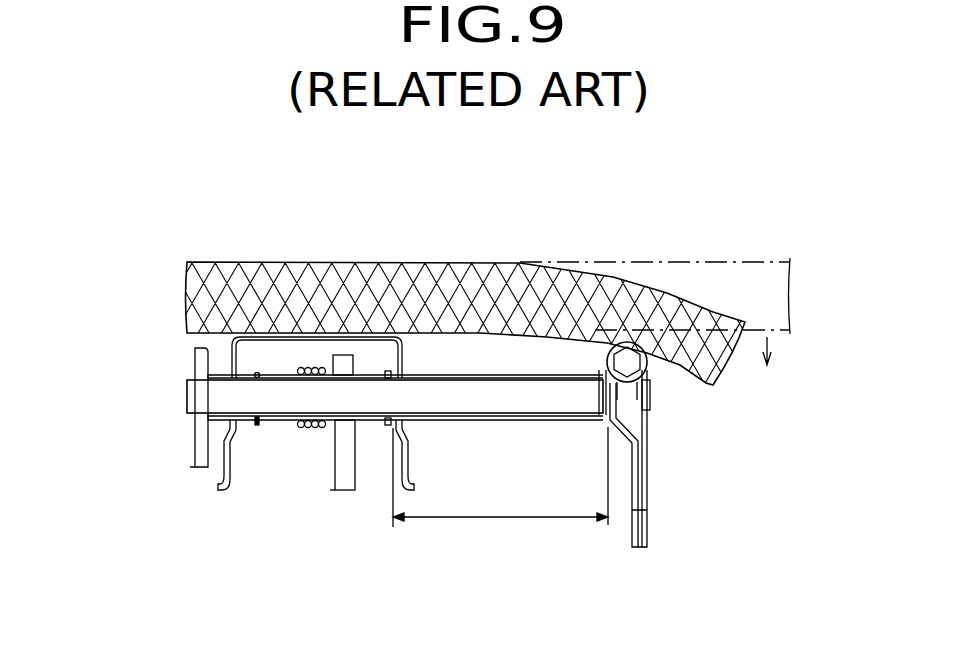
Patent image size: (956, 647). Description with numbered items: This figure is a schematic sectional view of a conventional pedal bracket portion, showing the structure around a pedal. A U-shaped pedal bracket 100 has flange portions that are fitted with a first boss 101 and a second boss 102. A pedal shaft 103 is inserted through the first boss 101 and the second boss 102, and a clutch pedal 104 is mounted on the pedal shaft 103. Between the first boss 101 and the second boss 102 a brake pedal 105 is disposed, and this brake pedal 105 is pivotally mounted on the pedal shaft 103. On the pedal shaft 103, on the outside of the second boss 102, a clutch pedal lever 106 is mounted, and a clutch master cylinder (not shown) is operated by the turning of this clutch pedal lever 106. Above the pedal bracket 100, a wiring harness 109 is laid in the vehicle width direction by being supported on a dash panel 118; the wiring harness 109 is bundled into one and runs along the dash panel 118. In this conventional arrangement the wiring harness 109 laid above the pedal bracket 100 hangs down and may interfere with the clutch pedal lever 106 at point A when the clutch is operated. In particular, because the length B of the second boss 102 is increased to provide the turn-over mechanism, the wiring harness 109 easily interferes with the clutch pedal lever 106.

The wiring harness 109 is at (394, 262).
The dash panel 118 is at (626, 196).
The pedal shaft 103 is at (190, 395).
The clutch pedal 104 is at (195, 458).
The first boss 101 is at (255, 420).
The pedal bracket 100 is at (235, 470).
The brake pedal 105 is at (355, 458).
The second boss 102 is at (575, 420).
The clutch pedal lever 106 is at (646, 497).
The interference point A is at (656, 368).
The length of the second boss B is at (500, 477).